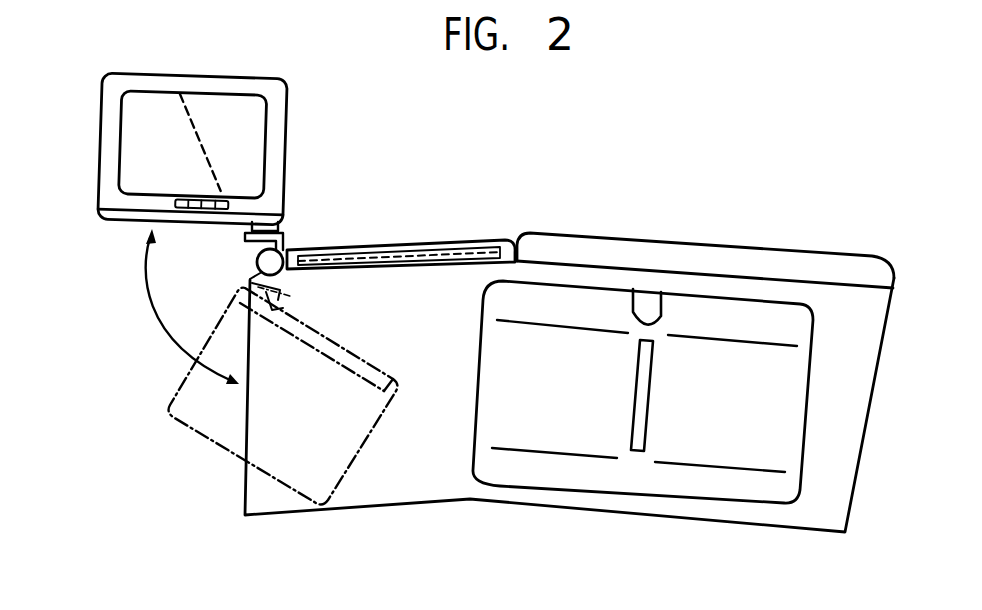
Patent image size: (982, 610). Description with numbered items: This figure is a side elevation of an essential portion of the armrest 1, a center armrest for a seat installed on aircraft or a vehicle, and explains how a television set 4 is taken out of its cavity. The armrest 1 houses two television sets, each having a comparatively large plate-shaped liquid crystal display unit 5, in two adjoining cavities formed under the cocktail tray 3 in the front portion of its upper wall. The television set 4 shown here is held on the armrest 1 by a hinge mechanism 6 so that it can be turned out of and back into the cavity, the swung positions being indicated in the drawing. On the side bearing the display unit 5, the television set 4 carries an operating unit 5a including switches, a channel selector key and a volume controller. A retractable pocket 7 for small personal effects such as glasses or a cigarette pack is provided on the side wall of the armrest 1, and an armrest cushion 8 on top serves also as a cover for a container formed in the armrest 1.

The armrest 1 is at (541, 222).
The cocktail tray 3 is at (398, 250).
The television set 4 is at (98, 142).
The liquid crystal display unit 5 is at (171, 113).
The operating unit 5a is at (173, 212).
The hinge mechanism 6 is at (302, 232).
The retractable pocket 7 is at (687, 484).
The armrest cushion 8 is at (661, 237).